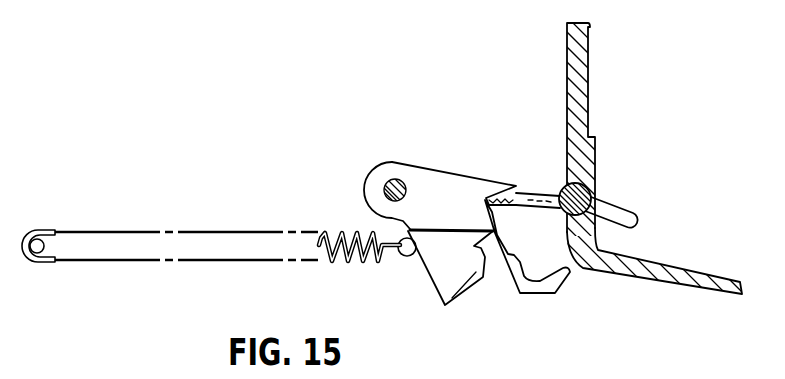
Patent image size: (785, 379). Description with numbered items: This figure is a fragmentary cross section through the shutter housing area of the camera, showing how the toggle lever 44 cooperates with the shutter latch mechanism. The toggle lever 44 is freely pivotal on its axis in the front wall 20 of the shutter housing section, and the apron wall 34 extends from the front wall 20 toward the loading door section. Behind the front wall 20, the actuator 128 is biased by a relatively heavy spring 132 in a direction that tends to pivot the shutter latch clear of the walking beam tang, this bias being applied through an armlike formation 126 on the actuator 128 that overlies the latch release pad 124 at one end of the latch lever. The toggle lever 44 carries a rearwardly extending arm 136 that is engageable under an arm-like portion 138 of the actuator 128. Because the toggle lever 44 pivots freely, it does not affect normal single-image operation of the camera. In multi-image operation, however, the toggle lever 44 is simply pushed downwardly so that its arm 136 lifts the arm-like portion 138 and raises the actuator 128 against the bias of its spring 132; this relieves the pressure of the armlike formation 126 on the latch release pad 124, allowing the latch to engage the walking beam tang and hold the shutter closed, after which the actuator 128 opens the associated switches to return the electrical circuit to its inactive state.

The front wall 20 is at (588, 98).
The apron wall 34 is at (673, 270).
The toggle lever 44 is at (608, 212).
The latch release pad 124 is at (498, 210).
The armlike formation 126 is at (517, 183).
The actuator 128 is at (422, 180).
The spring 132 is at (345, 265).
The rearwardly extending arm 136 is at (547, 192).
The arm-like portion 138 is at (500, 189).